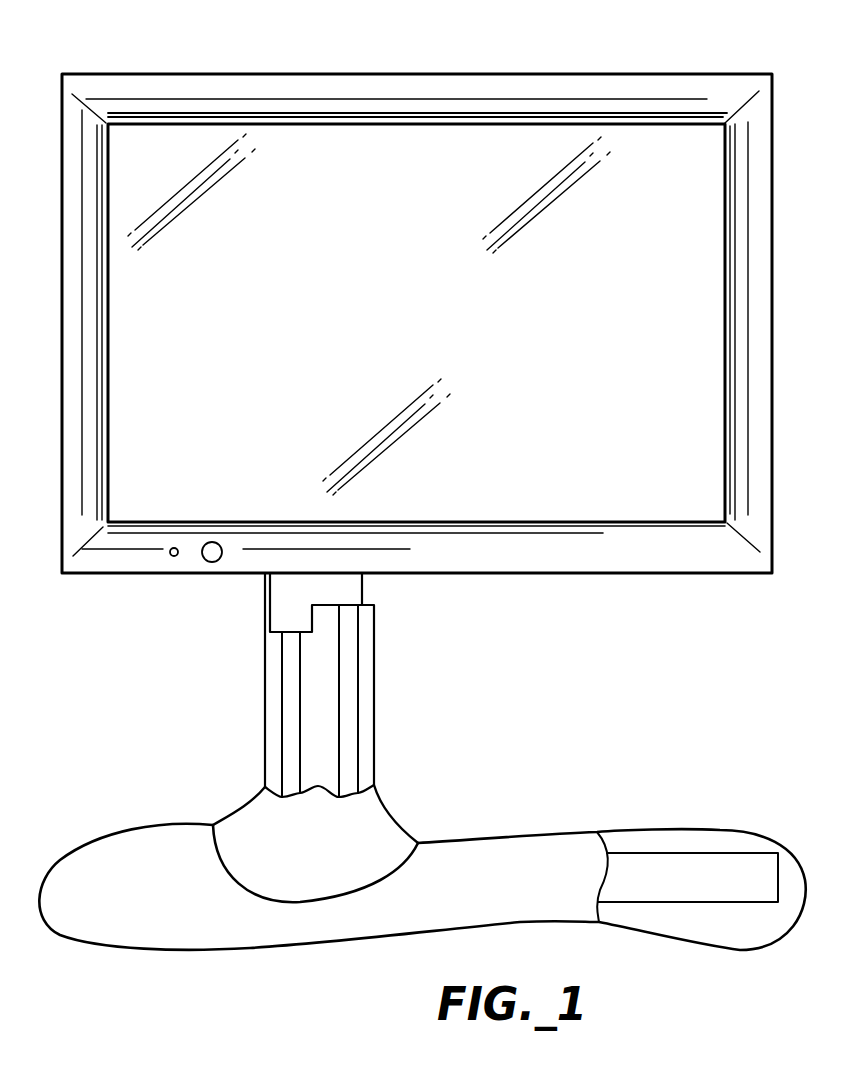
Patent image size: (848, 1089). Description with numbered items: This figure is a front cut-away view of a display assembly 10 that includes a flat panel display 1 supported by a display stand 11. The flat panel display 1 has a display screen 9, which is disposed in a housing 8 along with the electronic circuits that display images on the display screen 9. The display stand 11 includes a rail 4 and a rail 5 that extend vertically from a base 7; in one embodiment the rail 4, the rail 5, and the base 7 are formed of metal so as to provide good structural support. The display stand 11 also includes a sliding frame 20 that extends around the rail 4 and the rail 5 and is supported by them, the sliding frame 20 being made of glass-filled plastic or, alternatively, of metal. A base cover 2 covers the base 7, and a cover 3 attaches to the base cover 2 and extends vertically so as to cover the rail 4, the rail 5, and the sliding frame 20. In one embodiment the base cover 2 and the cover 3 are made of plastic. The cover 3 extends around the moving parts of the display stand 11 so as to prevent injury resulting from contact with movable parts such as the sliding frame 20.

The flat panel display 1 is at (740, 611).
The display assembly 10 is at (103, 48).
The housing 8 is at (760, 244).
The display screen 9 is at (640, 335).
The display stand 11 is at (182, 751).
The sliding frame 20 is at (352, 582).
The rail 5 is at (290, 718).
The rail 4 is at (348, 690).
The cover 3 is at (385, 832).
The base cover 2 is at (482, 847).
The base 7 is at (715, 865).